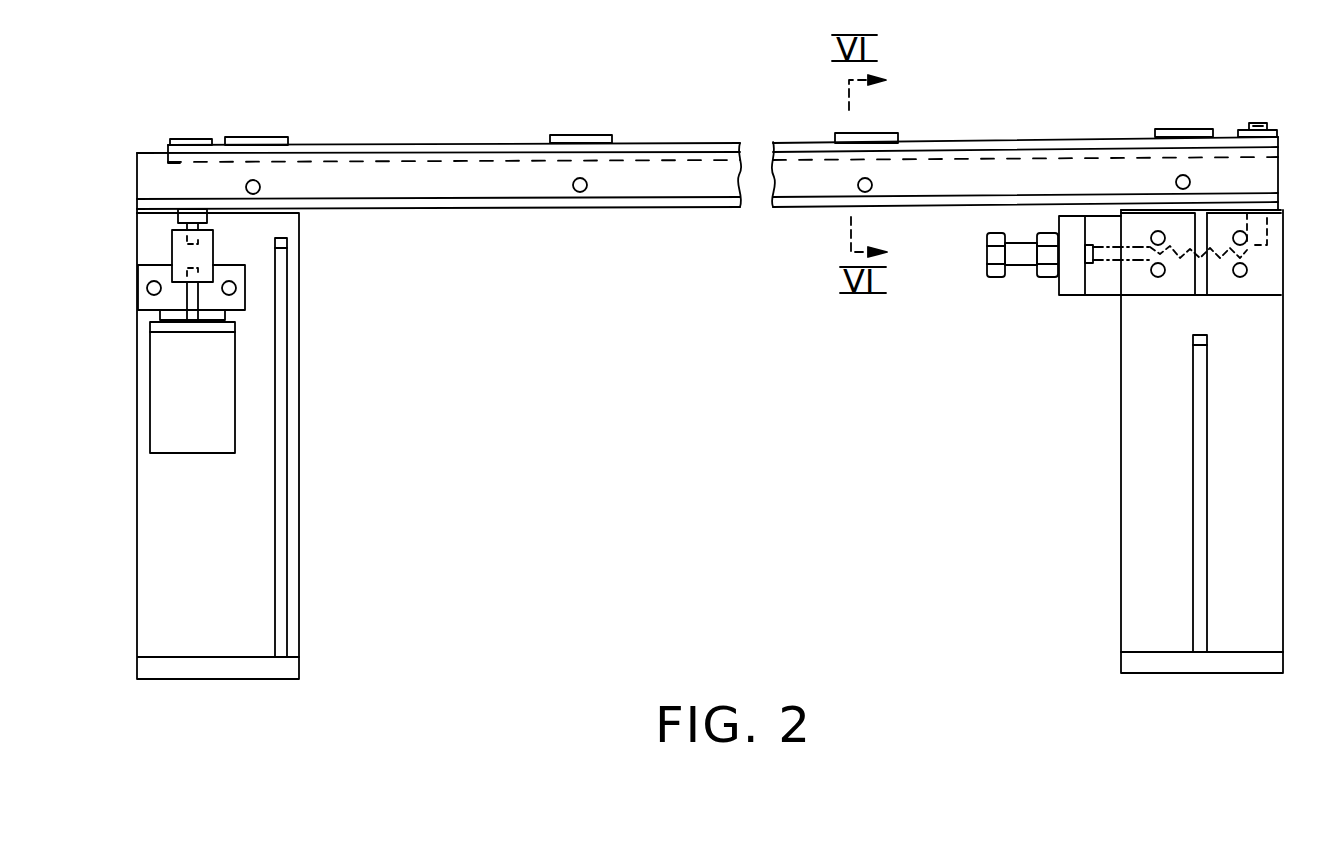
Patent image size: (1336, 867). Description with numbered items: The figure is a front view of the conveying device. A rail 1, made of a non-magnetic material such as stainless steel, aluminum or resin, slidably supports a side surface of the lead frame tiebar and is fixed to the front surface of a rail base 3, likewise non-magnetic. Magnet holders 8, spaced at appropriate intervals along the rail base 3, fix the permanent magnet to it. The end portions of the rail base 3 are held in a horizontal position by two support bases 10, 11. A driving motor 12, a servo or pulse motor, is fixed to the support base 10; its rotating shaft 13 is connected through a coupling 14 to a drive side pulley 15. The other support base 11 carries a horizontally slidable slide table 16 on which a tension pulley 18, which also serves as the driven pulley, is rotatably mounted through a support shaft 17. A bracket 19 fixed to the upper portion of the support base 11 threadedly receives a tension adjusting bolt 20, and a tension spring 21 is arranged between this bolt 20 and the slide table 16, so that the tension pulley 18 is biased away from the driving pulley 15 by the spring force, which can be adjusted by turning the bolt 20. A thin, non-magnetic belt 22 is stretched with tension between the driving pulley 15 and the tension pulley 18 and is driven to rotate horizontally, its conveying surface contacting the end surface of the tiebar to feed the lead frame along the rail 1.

The rail 1 is at (497, 199).
The rail base 3 is at (613, 208).
The magnet holder 8 is at (585, 135).
The support base 10 is at (298, 358).
The support base 11 is at (1137, 498).
The driving motor 12 is at (150, 376).
The rotating shaft 13 is at (190, 306).
The coupling 14 is at (172, 251).
The drive side pulley 15 is at (192, 139).
The slide table 16 is at (1280, 272).
The support shaft 17 is at (1291, 214).
The tension pulley 18 is at (1240, 130).
The bracket 19 is at (1073, 292).
The tension adjusting bolt 20 is at (990, 272).
The tension spring 21 is at (1212, 300).
The belt 22 is at (469, 144).